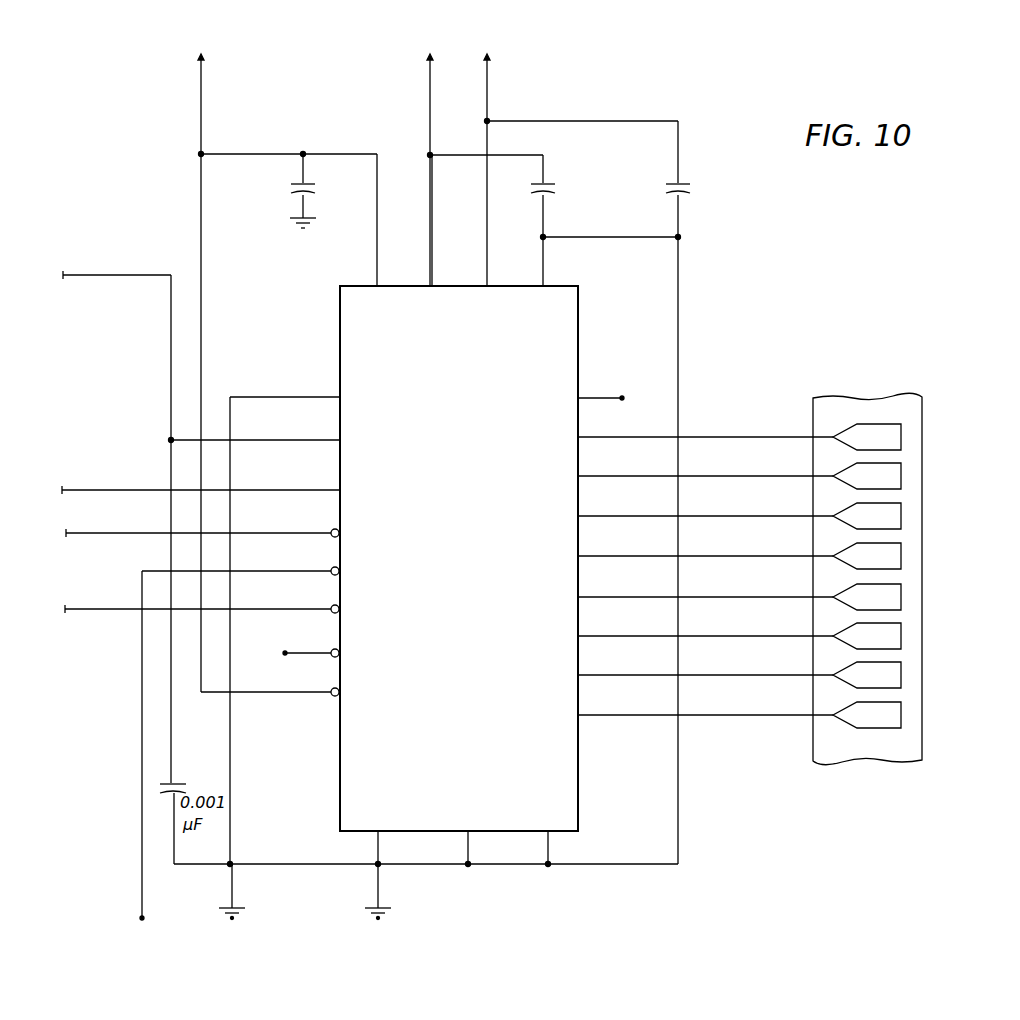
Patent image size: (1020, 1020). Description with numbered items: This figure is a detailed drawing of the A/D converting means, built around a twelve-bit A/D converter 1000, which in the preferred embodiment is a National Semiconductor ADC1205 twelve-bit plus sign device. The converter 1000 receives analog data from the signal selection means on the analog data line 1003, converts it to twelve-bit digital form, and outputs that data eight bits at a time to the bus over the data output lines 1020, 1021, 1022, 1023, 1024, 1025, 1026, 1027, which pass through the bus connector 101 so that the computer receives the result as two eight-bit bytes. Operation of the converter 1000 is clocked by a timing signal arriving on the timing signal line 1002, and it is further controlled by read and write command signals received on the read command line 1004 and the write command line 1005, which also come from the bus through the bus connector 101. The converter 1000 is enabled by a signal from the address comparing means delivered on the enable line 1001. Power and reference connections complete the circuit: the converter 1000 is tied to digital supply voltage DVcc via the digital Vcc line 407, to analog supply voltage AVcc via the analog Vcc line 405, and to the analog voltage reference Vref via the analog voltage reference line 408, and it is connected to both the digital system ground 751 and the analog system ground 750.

The bus connector 101 is at (835, 398).
The analog Vcc line 405 is at (430, 79).
The digital Vcc line 407 is at (201, 79).
The analog voltage reference line 408 is at (487, 87).
The analog system ground 750 is at (245, 910).
The digital system ground 751 is at (391, 910).
The A/D converter 1000 is at (578, 760).
The enable line 1001 is at (142, 733).
The timing signal line 1002 is at (126, 484).
The analog data line 1003 is at (126, 275).
The read command line 1004 is at (126, 528).
The write command line 1005 is at (126, 604).
The data output line 1020 is at (768, 715).
The data output line 1021 is at (768, 675).
The data output line 1022 is at (768, 636).
The data output line 1023 is at (768, 597).
The data output line 1024 is at (768, 556).
The data output line 1025 is at (768, 516).
The data output line 1026 is at (768, 476).
The data output line 1027 is at (768, 437).